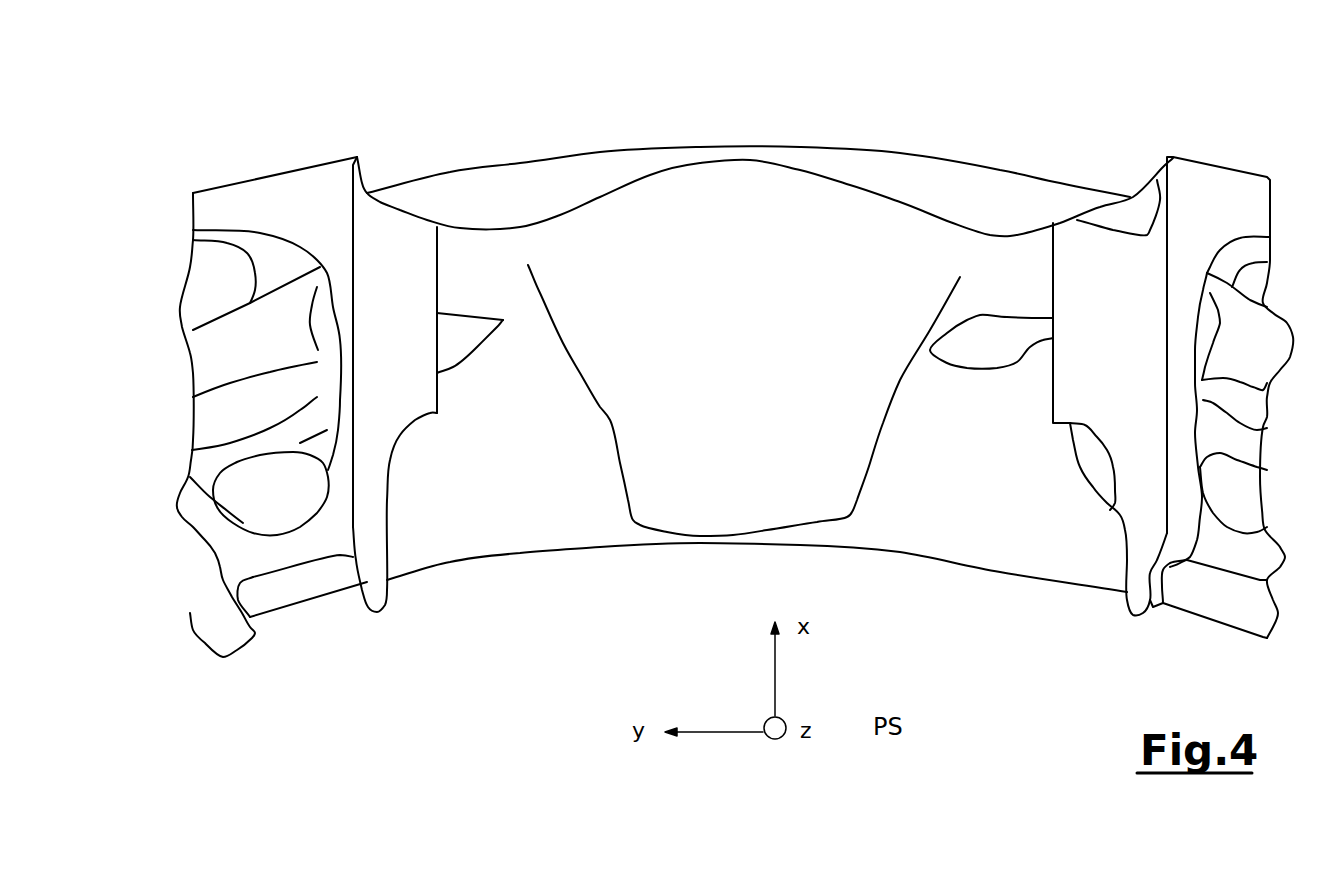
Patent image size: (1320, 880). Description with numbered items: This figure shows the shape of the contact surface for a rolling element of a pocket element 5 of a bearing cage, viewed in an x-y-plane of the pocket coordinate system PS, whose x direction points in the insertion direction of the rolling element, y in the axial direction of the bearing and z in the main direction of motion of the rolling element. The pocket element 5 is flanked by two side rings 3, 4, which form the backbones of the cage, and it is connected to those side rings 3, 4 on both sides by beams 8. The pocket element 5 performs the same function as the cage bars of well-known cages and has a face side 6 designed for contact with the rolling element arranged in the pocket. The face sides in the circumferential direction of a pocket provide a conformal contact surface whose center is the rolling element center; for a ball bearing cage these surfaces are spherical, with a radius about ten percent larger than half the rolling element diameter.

The side ring 3 is at (283, 547).
The side ring 4 is at (1227, 543).
The pocket element 5 is at (870, 210).
The face side 6 is at (777, 405).
The beam 8 is at (457, 270).